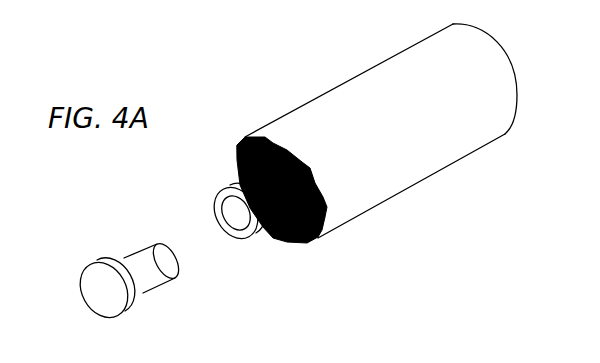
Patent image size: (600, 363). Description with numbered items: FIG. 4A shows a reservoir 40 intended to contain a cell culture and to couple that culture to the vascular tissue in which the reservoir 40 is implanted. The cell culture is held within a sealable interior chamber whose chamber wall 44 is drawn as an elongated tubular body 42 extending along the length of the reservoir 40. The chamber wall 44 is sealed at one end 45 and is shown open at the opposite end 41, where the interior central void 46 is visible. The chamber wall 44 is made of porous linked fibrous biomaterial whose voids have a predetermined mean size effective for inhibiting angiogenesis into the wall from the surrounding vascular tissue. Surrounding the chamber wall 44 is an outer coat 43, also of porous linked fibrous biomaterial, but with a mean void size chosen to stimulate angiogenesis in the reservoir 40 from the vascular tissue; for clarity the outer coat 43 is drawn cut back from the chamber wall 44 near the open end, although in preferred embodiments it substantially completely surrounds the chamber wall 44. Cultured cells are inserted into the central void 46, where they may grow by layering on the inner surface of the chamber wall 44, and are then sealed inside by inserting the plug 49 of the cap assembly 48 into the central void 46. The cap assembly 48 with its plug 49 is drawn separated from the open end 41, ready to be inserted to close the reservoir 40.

The reservoir 40 is at (256, 86).
The open end 41 is at (243, 240).
The cylindrical body 42 is at (372, 66).
The outer coat 43 is at (302, 246).
The chamber wall 44 is at (238, 185).
The sealed end 45 is at (505, 62).
The central void 46 is at (230, 215).
The cap assembly 48 is at (74, 311).
The plug 49 is at (146, 249).